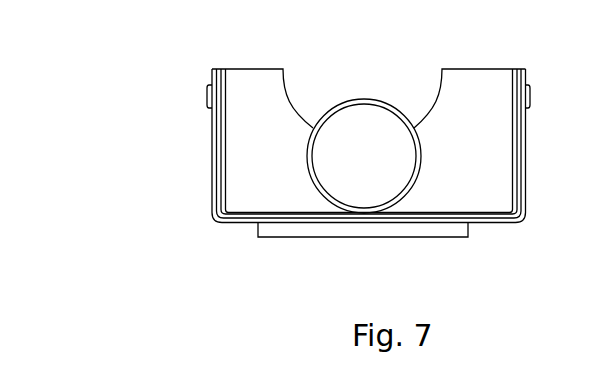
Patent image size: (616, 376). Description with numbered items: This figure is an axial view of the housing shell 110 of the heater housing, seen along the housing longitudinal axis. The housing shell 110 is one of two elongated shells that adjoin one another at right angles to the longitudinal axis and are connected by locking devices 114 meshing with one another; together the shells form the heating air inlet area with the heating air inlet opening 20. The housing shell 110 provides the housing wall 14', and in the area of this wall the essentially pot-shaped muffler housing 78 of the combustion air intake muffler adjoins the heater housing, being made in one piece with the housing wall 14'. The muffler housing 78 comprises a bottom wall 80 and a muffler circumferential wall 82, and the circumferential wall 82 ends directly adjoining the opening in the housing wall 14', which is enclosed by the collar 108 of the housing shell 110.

The heating air inlet opening 20 is at (402, 80).
The housing shell 110 is at (235, 68).
The locking devices 114 is at (207, 95).
The muffler housing 78 is at (345, 102).
The bottom wall 80 is at (392, 168).
The muffler circumferential wall 82 is at (308, 170).
The collar 108 is at (468, 237).
The housing wall 14' is at (274, 268).